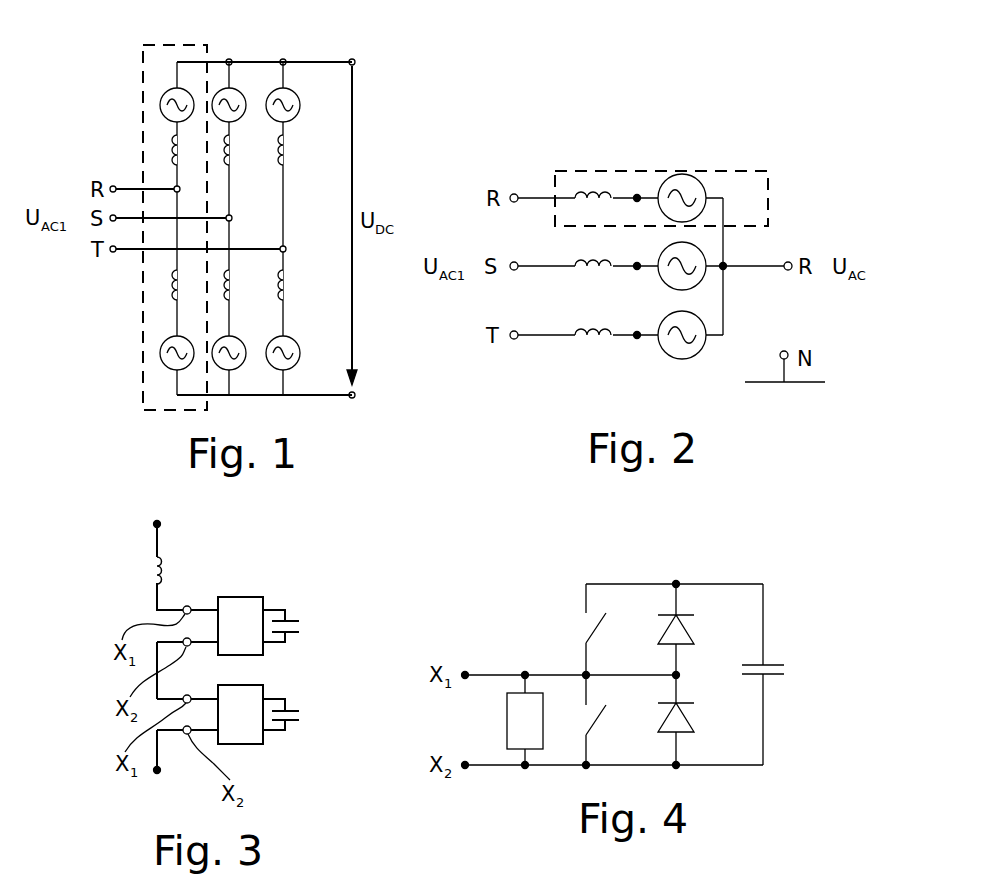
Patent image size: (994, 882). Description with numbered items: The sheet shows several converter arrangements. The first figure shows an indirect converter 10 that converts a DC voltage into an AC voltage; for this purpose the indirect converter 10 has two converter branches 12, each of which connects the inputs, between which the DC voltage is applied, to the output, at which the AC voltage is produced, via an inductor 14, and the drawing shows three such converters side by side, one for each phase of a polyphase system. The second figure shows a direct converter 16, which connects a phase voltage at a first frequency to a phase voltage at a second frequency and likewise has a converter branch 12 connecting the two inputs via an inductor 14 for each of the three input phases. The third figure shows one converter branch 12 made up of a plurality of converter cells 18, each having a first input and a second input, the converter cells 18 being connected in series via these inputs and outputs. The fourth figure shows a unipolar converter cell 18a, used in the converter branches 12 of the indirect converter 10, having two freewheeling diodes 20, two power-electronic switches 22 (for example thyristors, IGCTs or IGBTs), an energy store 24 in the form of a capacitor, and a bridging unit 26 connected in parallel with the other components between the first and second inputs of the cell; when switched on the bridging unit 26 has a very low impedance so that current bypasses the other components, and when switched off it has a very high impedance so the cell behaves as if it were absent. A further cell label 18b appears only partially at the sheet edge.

In FIG. 1, the indirect converter 10 is at (207, 47).
In FIG. 1, the converter branch 12 is at (160, 105).
In FIG. 2, the converter branch 12 is at (692, 173).
In FIG. 1, the inductor 14 is at (168, 158).
In FIG. 2, the inductor 14 is at (607, 180).
In FIG. 2, the direct converter 16 is at (764, 171).
In FIG. 3, the converter cell 18 is at (248, 597).
In FIG. 4, the unipolar converter cell 18a is at (795, 567).
In FIG. 4, the submodule 18b is at (751, 877).
In FIG. 4, the freewheeling diode 20 is at (690, 628).
In FIG. 4, the power-electronic switch 22 is at (593, 628).
In FIG. 4, the energy store 24 is at (772, 680).
In FIG. 4, the bridging unit 26 is at (505, 705).